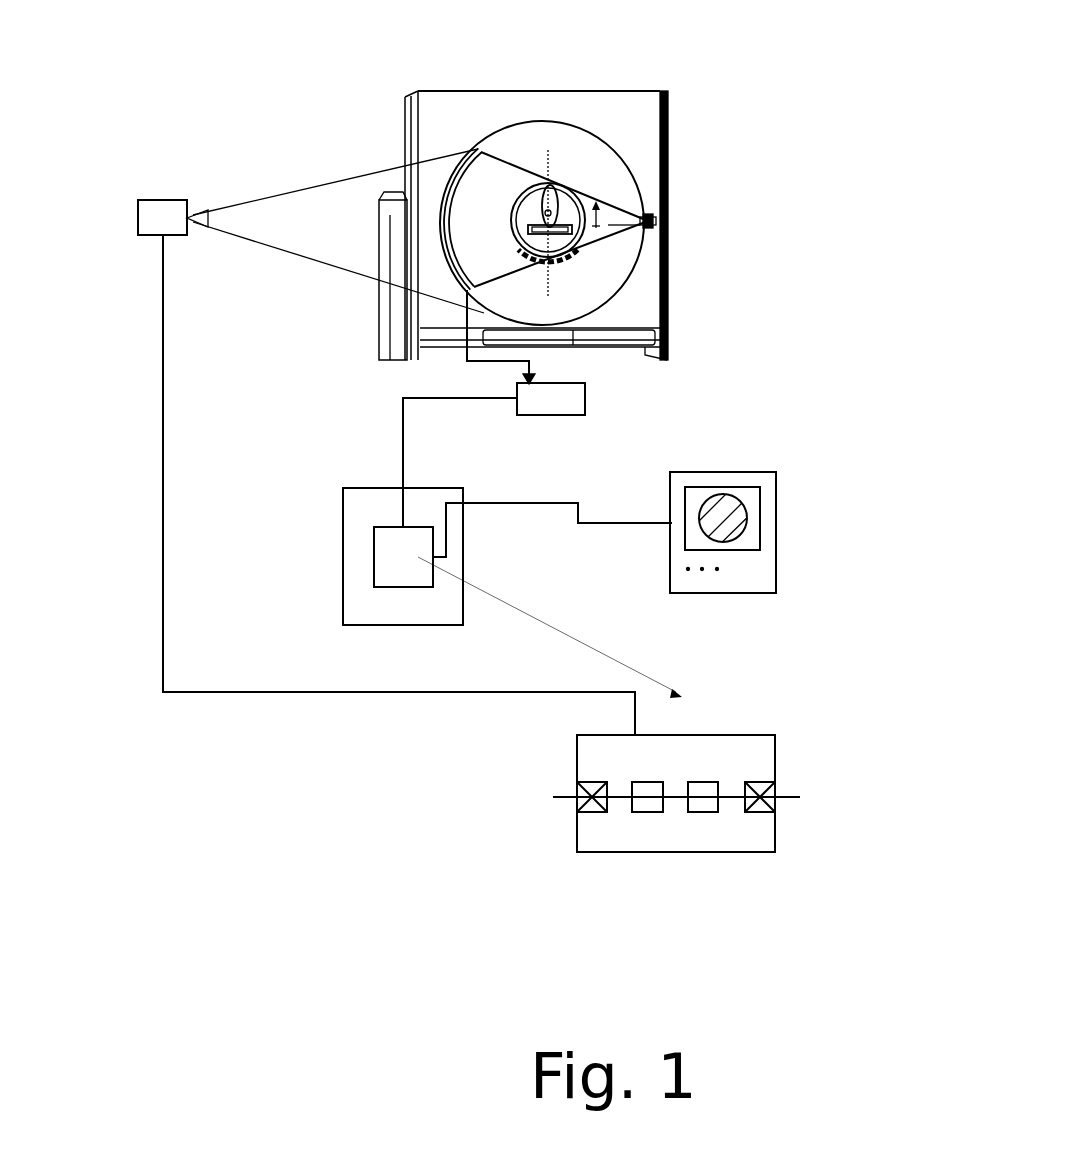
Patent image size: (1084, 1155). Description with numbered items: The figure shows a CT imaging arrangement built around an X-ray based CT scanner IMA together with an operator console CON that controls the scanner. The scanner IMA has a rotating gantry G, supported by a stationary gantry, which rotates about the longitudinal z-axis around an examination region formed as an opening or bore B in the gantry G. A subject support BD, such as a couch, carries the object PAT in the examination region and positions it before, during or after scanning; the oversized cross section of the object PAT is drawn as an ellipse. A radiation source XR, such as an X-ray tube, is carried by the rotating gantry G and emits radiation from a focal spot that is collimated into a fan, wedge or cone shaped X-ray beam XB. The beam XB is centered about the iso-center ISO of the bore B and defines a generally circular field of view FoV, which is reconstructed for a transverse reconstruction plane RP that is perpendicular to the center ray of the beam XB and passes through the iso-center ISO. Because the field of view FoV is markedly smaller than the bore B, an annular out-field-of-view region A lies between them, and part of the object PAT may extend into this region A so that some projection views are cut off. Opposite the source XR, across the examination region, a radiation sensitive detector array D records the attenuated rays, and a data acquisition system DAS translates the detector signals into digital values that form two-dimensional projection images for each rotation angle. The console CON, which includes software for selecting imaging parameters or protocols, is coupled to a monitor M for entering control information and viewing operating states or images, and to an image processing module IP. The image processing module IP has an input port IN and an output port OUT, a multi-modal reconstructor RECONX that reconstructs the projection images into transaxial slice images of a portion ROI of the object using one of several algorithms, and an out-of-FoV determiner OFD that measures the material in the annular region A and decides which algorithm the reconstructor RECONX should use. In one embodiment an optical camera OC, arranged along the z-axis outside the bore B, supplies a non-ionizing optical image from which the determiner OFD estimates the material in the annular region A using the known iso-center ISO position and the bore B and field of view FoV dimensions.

The optical camera OC is at (165, 218).
The bore B is at (520, 205).
The region of interest ROI is at (476, 138).
The reconstruction plane RP is at (547, 180).
The CT scanner IMA is at (633, 92).
The object PAT is at (560, 188).
The rotating gantry G is at (627, 150).
The annular out-field-of-view region A is at (574, 191).
The radiation source XR is at (653, 214).
The X-ray beam XB is at (641, 227).
The iso-center ISO is at (551, 225).
The field of view FoV is at (573, 251).
The detector array D is at (458, 262).
The subject support BD is at (417, 289).
The data acquisition system DAS is at (585, 400).
The operator console CON is at (360, 505).
The monitor M is at (768, 503).
The image processing module IP is at (407, 572).
The input port IN is at (572, 802).
The output port OUT is at (778, 803).
The out-of-FoV determiner OFD is at (637, 813).
The multi-modal reconstructor RECONX is at (710, 813).